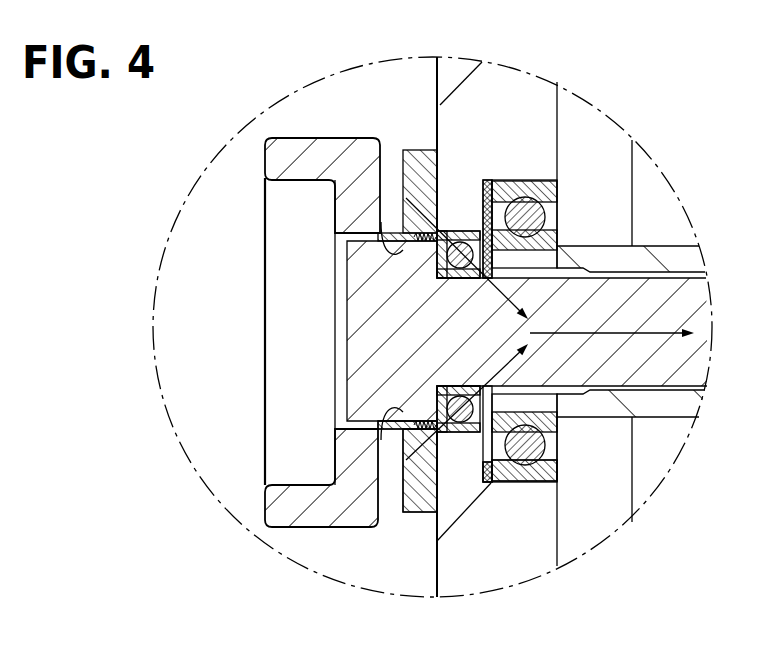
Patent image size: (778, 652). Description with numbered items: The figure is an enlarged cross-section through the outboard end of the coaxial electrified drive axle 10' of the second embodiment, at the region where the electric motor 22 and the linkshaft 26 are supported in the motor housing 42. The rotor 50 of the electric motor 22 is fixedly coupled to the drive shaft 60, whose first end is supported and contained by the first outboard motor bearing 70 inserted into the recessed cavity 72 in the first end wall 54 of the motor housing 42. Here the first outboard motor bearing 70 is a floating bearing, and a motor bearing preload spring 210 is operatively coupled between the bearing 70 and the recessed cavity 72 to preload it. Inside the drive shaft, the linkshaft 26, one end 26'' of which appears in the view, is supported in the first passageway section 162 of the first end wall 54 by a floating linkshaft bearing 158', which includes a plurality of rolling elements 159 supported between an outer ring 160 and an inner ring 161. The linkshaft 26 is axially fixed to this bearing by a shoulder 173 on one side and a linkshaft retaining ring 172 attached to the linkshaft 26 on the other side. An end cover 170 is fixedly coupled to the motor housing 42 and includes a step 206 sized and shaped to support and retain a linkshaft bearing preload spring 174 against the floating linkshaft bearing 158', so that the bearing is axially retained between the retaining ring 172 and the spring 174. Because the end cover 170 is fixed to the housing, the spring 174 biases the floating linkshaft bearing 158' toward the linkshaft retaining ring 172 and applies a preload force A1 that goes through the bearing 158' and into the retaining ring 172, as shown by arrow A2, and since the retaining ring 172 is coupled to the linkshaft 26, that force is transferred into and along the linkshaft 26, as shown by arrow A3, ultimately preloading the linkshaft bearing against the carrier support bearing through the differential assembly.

The rotary assembly 10' is at (432, 318).
The electric motor 22 is at (447, 568).
The linkshaft 26 is at (334, 279).
The hub flange 26'' is at (266, 143).
The motor housing 42 is at (452, 74).
The rotor 50 is at (625, 148).
The first end wall 54 is at (463, 113).
The drive shaft 60 is at (618, 236).
The first outboard motor bearing 70 is at (523, 176).
The recessed cavity 72 is at (462, 231).
The floating linkshaft bearing 158' is at (505, 513).
The rolling elements 159 is at (425, 263).
The outer ring 160 is at (438, 432).
The inner ring 161 is at (485, 350).
The first passageway section 162 is at (437, 187).
The end cover 170 is at (398, 507).
The linkshaft retaining ring 172 is at (480, 370).
The shoulder 173 is at (437, 266).
The linkshaft bearing preload spring 174 is at (433, 435).
The step 206 is at (472, 368).
The motor bearing preload spring 210 is at (488, 178).
The preload force A1 is at (437, 243).
The arrow A2 is at (515, 284).
The arrow A3 is at (660, 332).